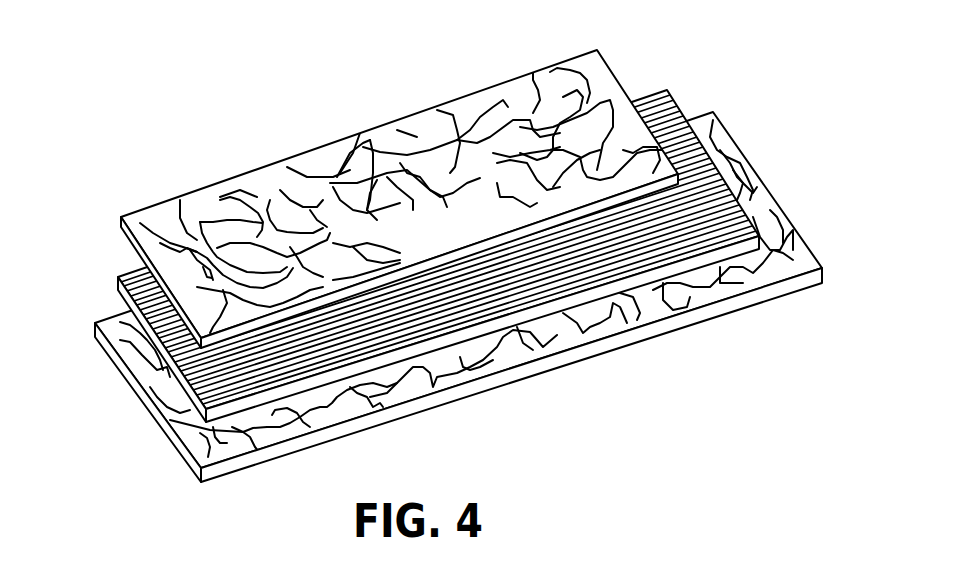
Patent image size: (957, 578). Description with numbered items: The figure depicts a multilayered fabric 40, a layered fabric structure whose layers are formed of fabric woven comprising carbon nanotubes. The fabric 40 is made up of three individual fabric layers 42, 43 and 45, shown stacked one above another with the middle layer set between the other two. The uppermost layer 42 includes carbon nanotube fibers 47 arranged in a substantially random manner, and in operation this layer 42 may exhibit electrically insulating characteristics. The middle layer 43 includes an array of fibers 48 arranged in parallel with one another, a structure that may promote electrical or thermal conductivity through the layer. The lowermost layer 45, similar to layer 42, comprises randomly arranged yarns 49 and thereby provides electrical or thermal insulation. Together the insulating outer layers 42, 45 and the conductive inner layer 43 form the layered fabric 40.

The multilayered fabric 40 is at (113, 84).
The fabric layer 42 is at (609, 55).
The fabric layer 43 is at (686, 88).
The fabric layer 45 is at (728, 115).
The carbon nanotube fibers 47 is at (533, 68).
The fibers 48 is at (747, 208).
The yarns 49 is at (790, 250).